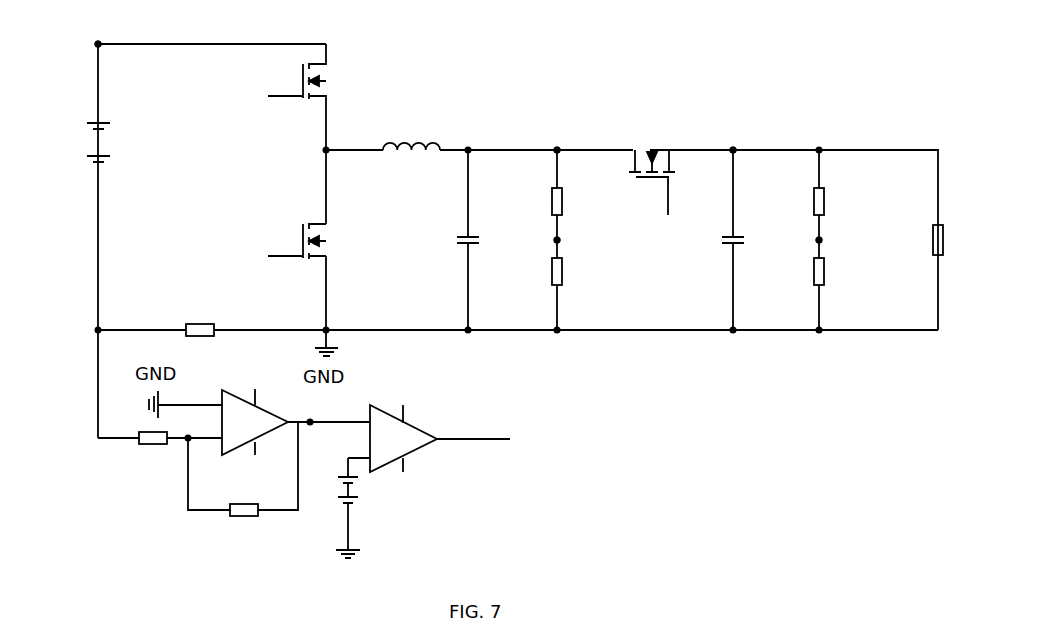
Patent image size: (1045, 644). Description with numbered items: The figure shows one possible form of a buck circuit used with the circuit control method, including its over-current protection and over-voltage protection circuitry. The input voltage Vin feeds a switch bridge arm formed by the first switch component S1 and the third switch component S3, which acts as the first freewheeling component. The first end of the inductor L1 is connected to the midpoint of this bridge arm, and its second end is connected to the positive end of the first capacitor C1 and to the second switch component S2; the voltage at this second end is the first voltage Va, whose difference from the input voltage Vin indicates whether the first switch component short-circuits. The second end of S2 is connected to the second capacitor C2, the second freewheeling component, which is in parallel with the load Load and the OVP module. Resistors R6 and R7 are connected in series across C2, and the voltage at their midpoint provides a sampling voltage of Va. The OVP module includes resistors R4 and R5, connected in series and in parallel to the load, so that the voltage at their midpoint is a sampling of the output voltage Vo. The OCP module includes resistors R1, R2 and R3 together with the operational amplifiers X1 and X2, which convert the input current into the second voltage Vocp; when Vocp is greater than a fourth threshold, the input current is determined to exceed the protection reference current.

The input voltage Vin is at (98, 44).
The first switch component S1 is at (295, 97).
The third switch component S3 is at (292, 241).
The inductor L1 is at (411, 132).
The second capacitor C2 is at (452, 240).
The resistor R6 is at (539, 195).
The resistor R7 is at (539, 285).
The first voltage Va is at (557, 150).
The second switch component S2 is at (652, 182).
The output voltage Vo is at (733, 150).
The first capacitor C1 is at (713, 240).
The resistor R4 is at (801, 195).
The resistor R5 is at (801, 285).
The load Load is at (910, 240).
The resistor R1 is at (200, 315).
The resistor R2 is at (152, 454).
The resistor R3 is at (243, 486).
The operational amplifier X1 is at (255, 439).
The operational amplifier X2 is at (386, 481).
The second voltage Vocp is at (501, 441).